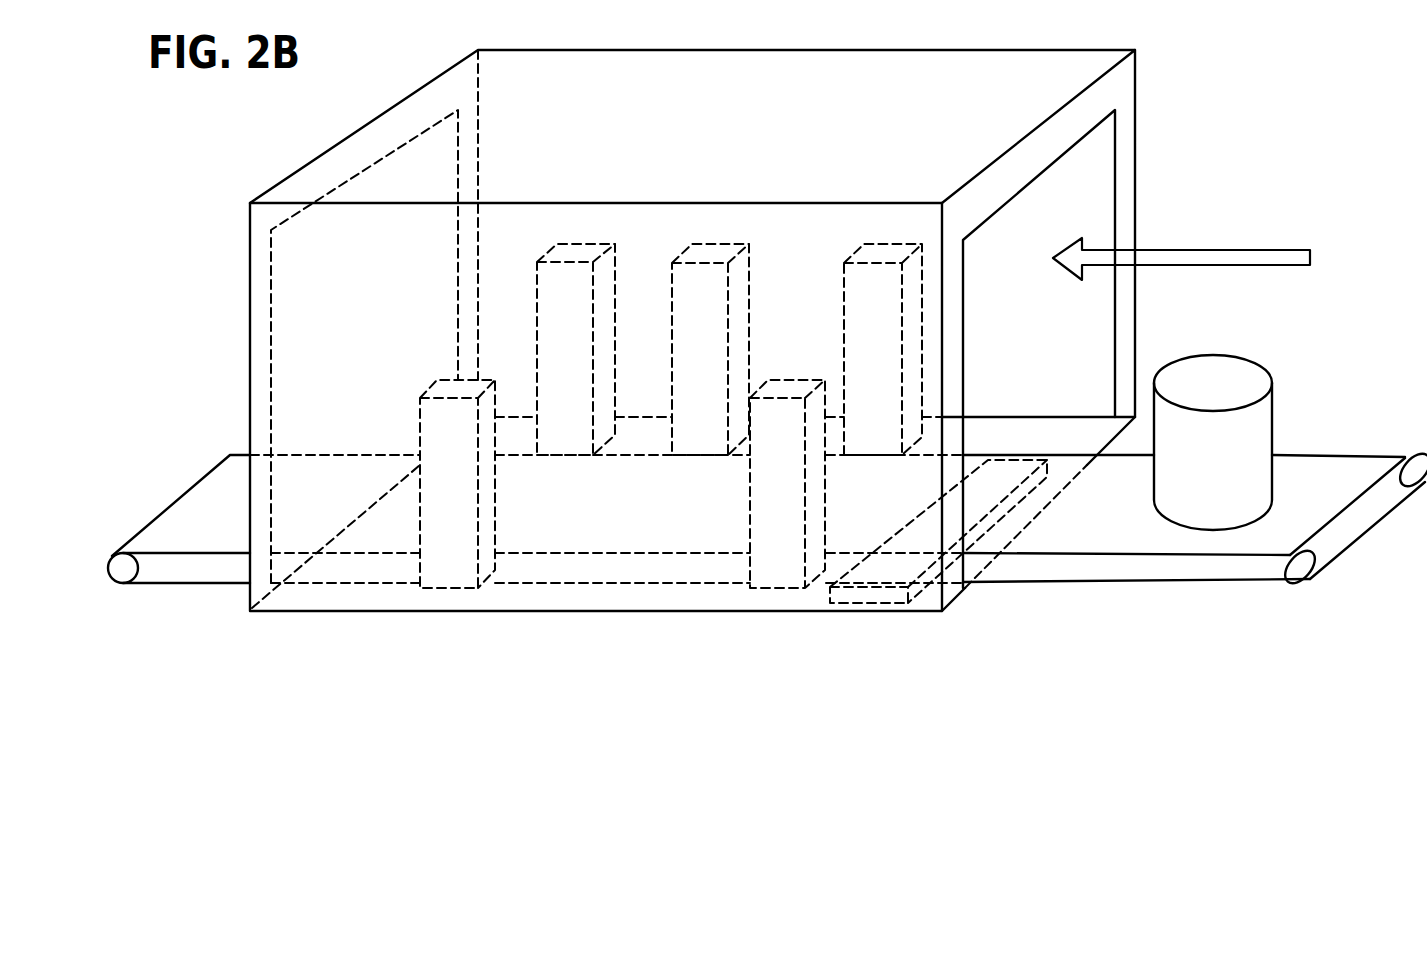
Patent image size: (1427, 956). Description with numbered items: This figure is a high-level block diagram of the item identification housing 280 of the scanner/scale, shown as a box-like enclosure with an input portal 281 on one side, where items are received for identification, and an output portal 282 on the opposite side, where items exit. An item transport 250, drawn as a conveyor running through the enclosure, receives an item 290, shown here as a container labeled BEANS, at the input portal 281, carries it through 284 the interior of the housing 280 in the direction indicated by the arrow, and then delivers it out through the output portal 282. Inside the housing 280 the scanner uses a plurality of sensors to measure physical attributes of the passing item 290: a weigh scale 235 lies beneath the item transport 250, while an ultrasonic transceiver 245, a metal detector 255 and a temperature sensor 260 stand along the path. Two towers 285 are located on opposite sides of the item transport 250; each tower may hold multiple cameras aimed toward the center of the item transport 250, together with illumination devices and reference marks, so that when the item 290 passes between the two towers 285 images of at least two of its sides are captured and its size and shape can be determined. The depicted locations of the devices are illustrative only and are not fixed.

The item identification housing 280 is at (672, 50).
The output portal 282 is at (333, 315).
The input portal 281 is at (1077, 202).
The transport direction through the housing 284 is at (1252, 249).
The towers 285 is at (563, 403).
The ultrasonic transceiver 245 is at (703, 282).
The temperature sensor 260 is at (885, 253).
The metal detector 255 is at (777, 535).
The weigh scale 235 is at (878, 597).
The item transport 250 is at (1090, 527).
The item 290 is at (1223, 510).